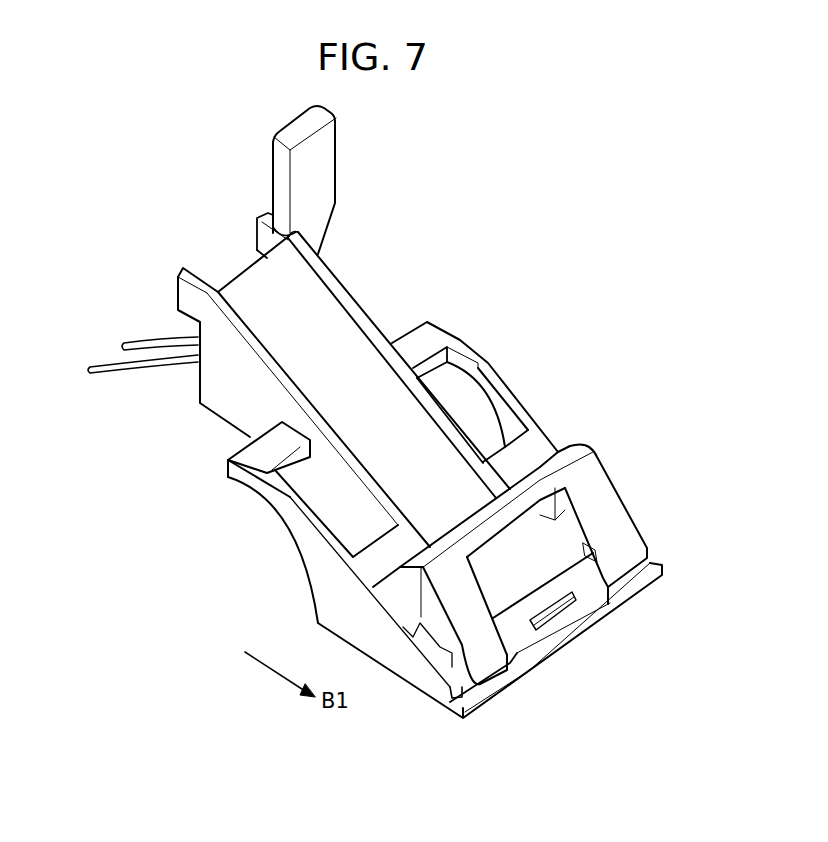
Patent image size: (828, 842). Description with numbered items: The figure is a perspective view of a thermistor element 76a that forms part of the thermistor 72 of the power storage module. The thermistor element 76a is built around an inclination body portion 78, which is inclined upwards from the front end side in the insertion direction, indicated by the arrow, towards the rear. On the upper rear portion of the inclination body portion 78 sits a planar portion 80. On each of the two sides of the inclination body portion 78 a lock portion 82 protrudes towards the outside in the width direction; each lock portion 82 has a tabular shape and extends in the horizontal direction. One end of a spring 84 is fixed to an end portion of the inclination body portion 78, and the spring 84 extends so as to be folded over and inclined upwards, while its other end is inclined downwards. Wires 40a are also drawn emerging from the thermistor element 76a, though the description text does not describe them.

The thermistor 72 is at (560, 190).
The planar portion 80 is at (327, 156).
The thermistor element 76a is at (341, 322).
The lock portion 82 is at (436, 335).
The spring 84 is at (598, 480).
The inclination body portion 78 is at (222, 405).
The wires 40a is at (132, 370).